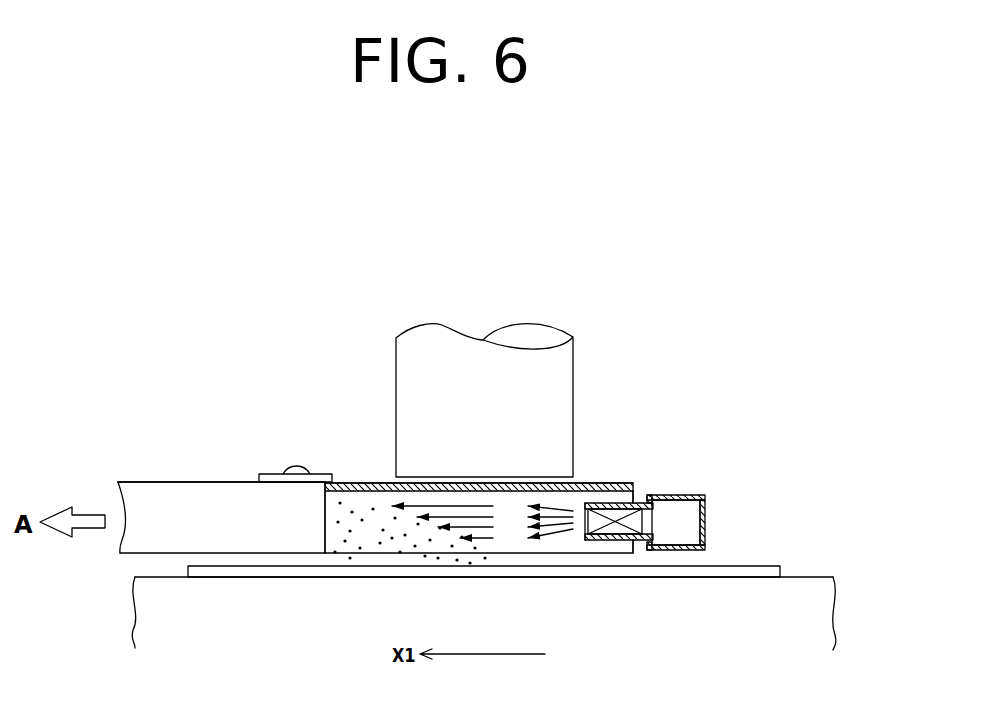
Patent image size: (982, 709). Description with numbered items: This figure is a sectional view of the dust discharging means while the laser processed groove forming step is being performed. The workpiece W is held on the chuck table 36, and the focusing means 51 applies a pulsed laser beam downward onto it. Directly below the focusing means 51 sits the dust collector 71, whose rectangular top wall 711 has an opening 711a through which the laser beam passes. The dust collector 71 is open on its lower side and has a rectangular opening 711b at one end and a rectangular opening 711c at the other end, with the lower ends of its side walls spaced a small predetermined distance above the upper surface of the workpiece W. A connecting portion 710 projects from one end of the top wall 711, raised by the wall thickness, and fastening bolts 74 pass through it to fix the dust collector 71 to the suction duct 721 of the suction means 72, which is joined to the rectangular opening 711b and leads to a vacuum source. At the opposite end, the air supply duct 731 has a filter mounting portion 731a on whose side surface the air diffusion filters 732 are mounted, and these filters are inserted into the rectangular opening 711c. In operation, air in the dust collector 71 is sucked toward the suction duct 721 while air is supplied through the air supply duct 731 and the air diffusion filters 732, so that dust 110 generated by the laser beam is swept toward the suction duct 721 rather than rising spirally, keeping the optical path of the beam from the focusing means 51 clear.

The chuck table 36 is at (150, 612).
The workpiece W is at (757, 566).
The focusing means 51 is at (556, 373).
The dust collector 71 is at (626, 479).
The connecting portion 710 is at (323, 482).
The top wall 711 is at (598, 483).
The opening 711a is at (510, 490).
The rectangular opening 711b is at (320, 513).
The rectangular opening 711c is at (628, 497).
The suction means 72 is at (190, 447).
The suction duct 721 is at (158, 481).
The air supply duct 731 is at (712, 496).
The filter mounting portion 731a is at (706, 517).
The air diffusion filter 732 is at (620, 528).
The fastening bolt 74 is at (290, 468).
The dust 110 is at (355, 545).